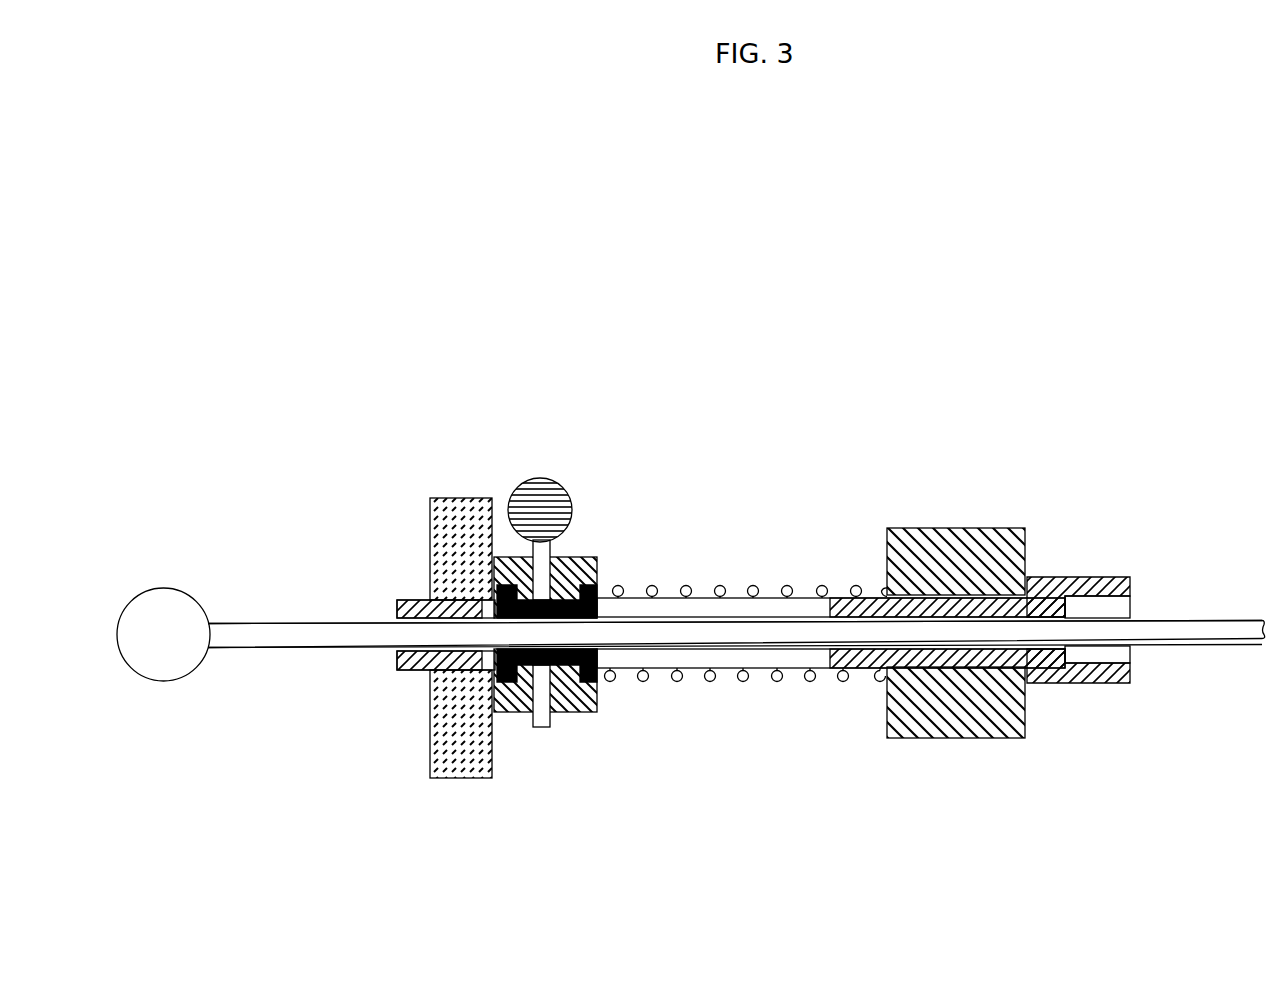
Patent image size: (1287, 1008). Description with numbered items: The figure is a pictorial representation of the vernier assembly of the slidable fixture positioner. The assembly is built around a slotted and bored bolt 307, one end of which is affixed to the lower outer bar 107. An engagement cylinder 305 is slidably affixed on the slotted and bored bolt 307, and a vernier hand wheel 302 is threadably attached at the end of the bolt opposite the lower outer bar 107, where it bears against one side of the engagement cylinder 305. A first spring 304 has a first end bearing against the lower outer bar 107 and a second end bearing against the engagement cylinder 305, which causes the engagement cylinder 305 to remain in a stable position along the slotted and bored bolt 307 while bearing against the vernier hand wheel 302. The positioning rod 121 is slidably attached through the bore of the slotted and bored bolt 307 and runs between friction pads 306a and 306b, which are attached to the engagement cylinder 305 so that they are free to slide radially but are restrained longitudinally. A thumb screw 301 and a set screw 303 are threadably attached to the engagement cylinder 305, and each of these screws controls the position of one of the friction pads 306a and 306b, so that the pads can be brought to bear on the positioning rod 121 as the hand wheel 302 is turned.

The lower outer bar 107 is at (1042, 546).
The positioning rod 121 is at (691, 723).
The thumb screw 301 is at (434, 416).
The vernier hand wheel 302 is at (382, 597).
The set screw 303 is at (477, 699).
The first spring 304 is at (831, 723).
The engagement cylinder 305 is at (645, 456).
The friction pad 306a is at (646, 515).
The friction pad 306b is at (471, 786).
The slotted and bored bolt 307 is at (1118, 572).